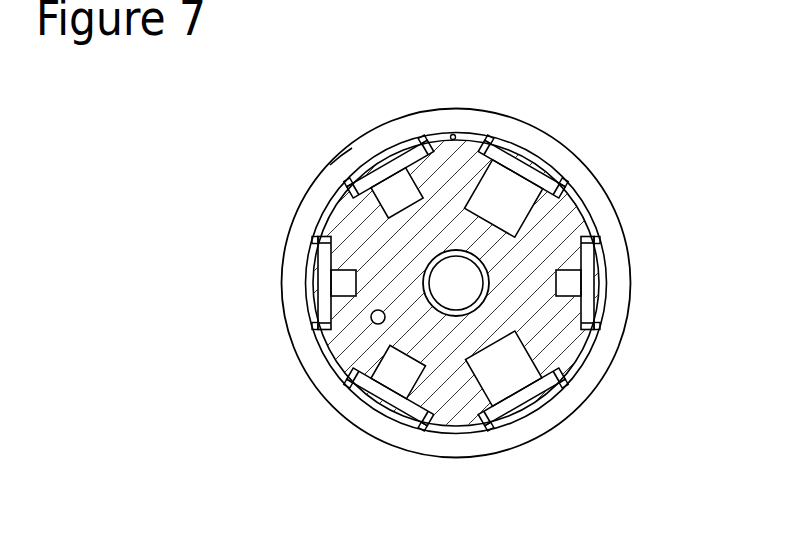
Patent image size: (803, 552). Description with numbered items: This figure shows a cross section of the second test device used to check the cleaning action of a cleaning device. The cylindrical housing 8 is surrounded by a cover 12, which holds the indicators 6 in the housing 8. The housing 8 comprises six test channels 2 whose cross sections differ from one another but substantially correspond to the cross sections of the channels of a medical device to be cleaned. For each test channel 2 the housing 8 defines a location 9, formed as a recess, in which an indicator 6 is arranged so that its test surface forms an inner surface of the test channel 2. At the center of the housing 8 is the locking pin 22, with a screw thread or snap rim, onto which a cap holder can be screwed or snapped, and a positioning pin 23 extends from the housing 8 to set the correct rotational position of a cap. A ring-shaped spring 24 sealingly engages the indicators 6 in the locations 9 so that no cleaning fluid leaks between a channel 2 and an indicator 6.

The test channel 2 is at (388, 197).
The indicator 6 is at (383, 162).
The housing 8 is at (595, 367).
The location 9 is at (422, 140).
The cover 12 is at (309, 208).
The locking pin 22 is at (468, 279).
The positioning pin 23 is at (373, 321).
The ring-shaped spring 24 is at (343, 179).